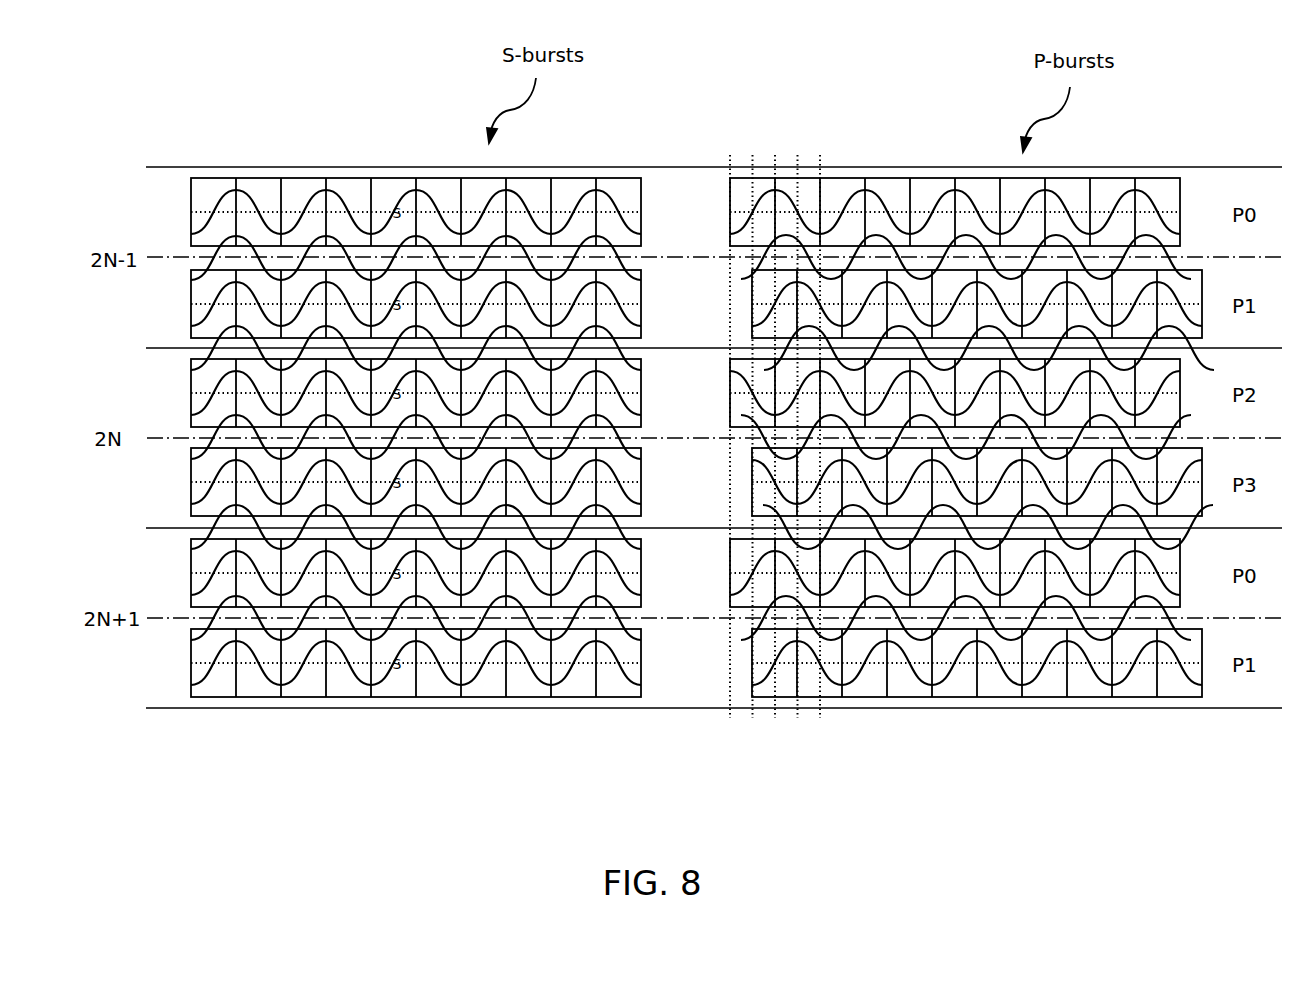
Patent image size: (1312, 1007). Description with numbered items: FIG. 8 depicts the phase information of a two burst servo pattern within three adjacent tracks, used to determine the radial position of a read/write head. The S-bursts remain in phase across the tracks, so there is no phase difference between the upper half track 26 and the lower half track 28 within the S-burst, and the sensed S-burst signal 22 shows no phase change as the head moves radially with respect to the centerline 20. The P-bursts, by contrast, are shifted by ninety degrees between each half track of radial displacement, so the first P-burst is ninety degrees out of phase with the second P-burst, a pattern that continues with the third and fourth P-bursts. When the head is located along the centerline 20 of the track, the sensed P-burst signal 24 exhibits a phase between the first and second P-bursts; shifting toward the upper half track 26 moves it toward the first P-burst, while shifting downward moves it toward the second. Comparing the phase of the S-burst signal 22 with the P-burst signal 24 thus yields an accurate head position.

The centerline 20 is at (1265, 258).
The sensed S-burst signal 22 is at (192, 268).
The sensed P-burst signal 24 is at (1143, 238).
The upper half track 26 is at (672, 221).
The lower half track 28 is at (672, 319).